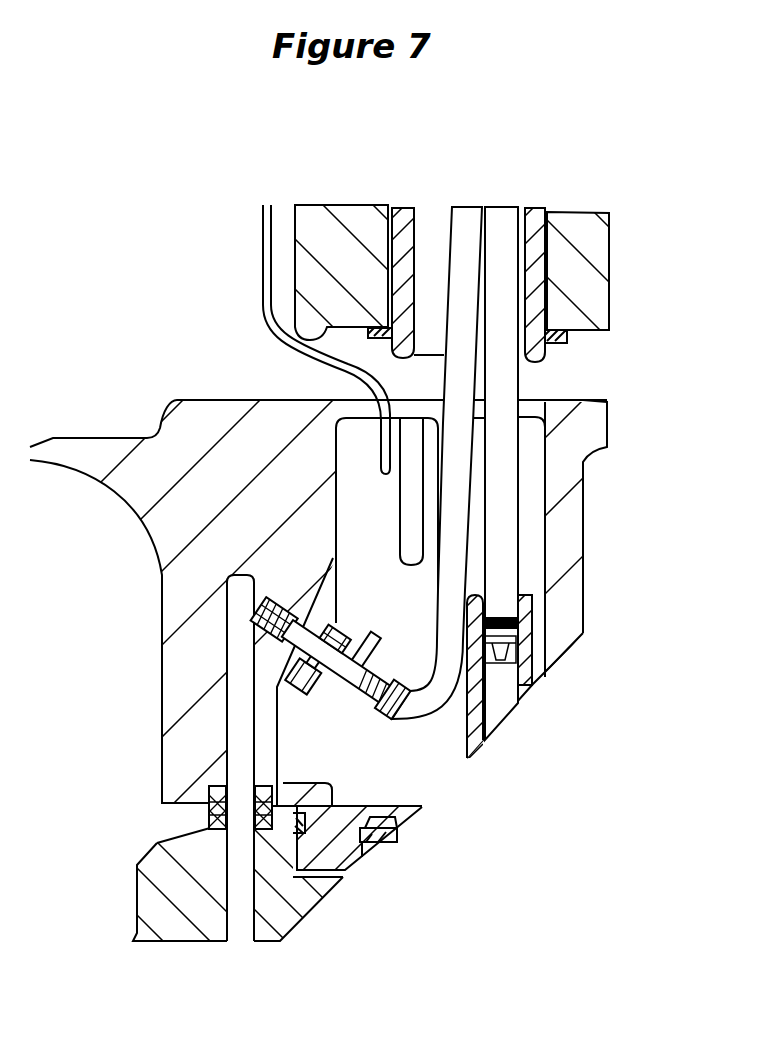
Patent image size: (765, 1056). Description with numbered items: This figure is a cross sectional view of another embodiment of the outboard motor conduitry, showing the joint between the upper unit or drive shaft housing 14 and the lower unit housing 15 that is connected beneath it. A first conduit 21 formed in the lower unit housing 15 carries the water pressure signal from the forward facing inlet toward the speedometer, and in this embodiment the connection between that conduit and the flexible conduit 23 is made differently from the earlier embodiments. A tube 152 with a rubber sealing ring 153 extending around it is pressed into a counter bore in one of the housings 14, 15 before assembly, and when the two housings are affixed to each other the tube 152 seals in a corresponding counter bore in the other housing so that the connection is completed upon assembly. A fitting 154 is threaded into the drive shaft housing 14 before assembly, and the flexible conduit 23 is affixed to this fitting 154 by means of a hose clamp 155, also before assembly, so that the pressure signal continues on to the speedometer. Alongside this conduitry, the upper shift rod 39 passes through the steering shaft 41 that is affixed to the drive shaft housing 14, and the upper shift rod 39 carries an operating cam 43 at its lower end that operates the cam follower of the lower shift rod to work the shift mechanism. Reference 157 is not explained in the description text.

The drive shaft housing 14 is at (210, 427).
The lower unit housing 15 is at (181, 926).
The first conduit 21 is at (238, 903).
The flexible conduit 23 is at (420, 713).
The upper shift rod 39 is at (503, 383).
The steering shaft 41 is at (437, 210).
The operating cam 43 is at (497, 690).
The tube 152 is at (157, 843).
The rubber sealing ring 153 is at (162, 803).
The fitting 154 is at (349, 626).
The hose clamp 155 is at (378, 643).
The bore 157 is at (242, 705).